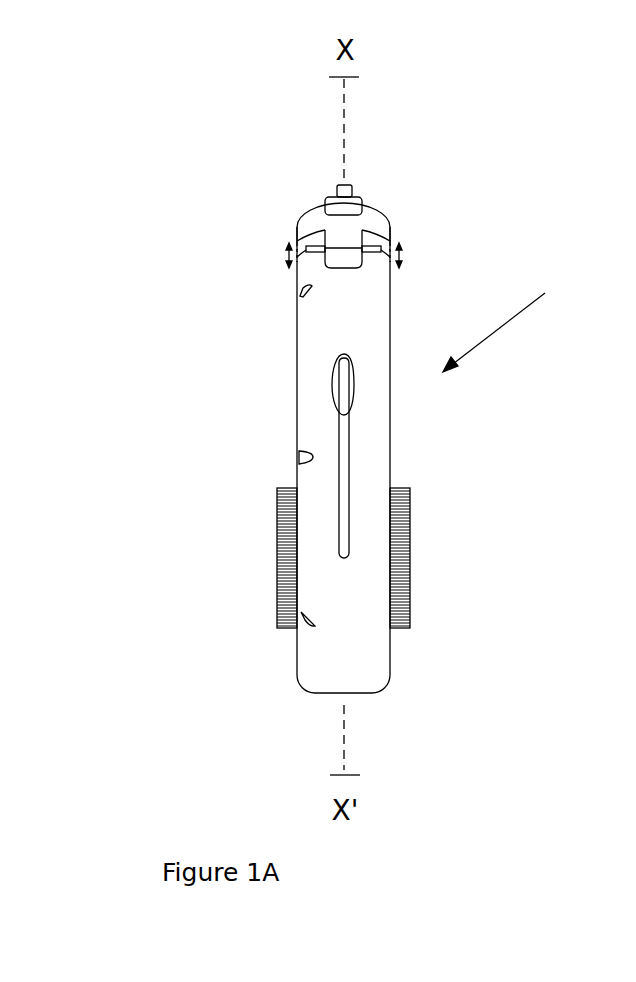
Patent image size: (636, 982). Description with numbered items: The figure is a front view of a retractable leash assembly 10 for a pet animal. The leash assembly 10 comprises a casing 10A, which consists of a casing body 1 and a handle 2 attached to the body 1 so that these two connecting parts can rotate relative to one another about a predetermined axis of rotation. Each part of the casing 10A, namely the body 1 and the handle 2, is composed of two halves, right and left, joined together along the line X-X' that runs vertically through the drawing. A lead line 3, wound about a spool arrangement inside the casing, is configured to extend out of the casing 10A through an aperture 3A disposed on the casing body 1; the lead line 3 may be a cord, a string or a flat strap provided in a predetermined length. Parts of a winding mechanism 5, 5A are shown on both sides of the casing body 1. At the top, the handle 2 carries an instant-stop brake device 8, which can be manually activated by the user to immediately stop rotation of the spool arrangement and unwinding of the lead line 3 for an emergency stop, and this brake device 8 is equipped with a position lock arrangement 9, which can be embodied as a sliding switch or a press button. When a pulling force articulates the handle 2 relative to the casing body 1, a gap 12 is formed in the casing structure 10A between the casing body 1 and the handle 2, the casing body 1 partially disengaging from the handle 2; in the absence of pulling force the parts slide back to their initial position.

The casing body 1 is at (358, 670).
The handle 2 is at (303, 213).
The lead line 3 is at (339, 445).
The aperture 3A is at (333, 378).
The winding mechanism part 5 is at (258, 539).
The winding mechanism part 5A is at (292, 565).
The instant-stop brake device 8 is at (362, 200).
The position lock arrangement 9 is at (348, 185).
The leash assembly 10 is at (523, 61).
The casing 10A is at (532, 312).
The gap 12 is at (407, 252).